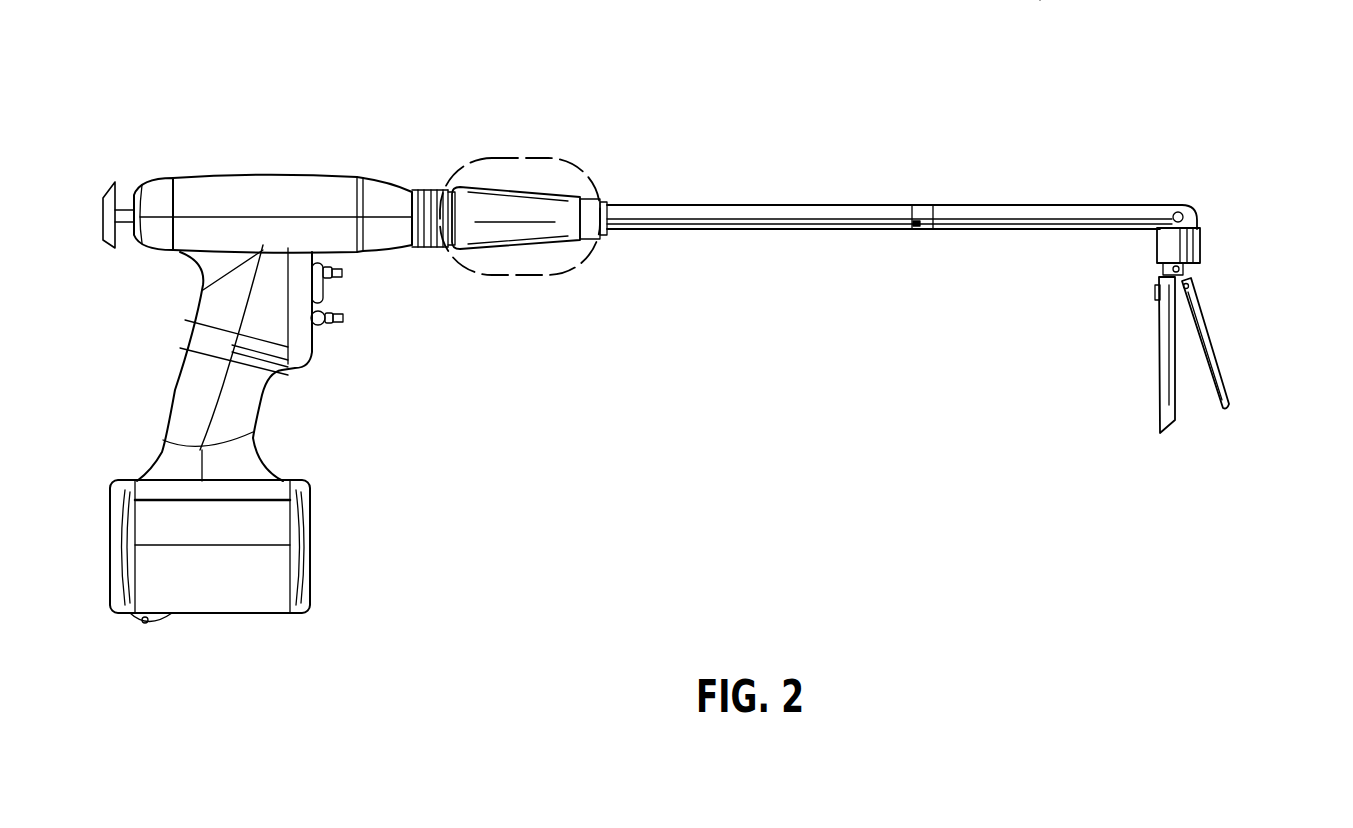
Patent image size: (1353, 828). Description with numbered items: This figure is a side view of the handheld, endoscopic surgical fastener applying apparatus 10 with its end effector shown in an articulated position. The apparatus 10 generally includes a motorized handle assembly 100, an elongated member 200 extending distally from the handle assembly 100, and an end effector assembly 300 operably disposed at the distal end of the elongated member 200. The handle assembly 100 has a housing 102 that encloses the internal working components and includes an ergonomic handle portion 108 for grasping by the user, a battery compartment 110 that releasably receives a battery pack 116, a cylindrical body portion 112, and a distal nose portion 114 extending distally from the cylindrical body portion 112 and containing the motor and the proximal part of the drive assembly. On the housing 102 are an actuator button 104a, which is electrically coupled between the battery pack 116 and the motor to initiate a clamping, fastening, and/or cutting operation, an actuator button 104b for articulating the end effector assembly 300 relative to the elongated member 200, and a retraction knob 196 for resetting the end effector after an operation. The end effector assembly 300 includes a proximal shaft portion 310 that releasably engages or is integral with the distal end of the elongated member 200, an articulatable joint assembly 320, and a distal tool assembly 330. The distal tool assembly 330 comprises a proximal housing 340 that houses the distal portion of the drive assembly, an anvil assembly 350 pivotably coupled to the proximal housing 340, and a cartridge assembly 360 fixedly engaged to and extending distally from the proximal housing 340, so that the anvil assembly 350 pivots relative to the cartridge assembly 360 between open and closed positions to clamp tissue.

The surgical fastener applying apparatus 10 is at (690, 132).
The motorized handle assembly 100 is at (313, 163).
The housing 102 is at (185, 388).
The actuator button 104a is at (342, 272).
The actuator button 104b is at (342, 320).
The handle portion 108 is at (203, 313).
The battery compartment 110 is at (230, 598).
The cylindrical body portion 112 is at (213, 190).
The distal nose portion 114 is at (503, 232).
The battery pack 116 is at (110, 570).
The retraction knob 196 is at (108, 186).
The elongated member 200 is at (720, 232).
The end effector assembly 300 is at (910, 145).
The proximal shaft portion 310 is at (1033, 212).
The articulatable joint assembly 320 is at (1198, 197).
The distal tool assembly 330 is at (1280, 200).
The proximal housing 340 is at (1203, 240).
The anvil assembly 350 is at (1212, 347).
The cartridge assembly 360 is at (1165, 362).